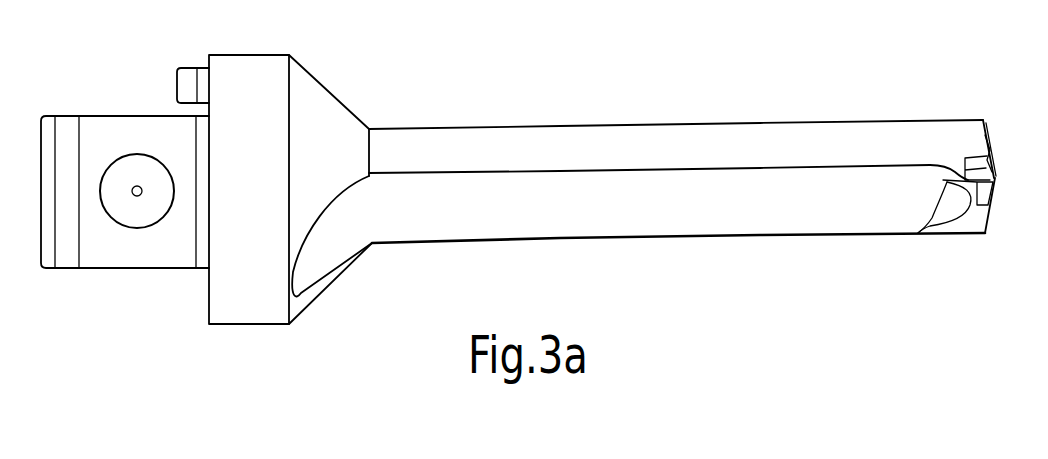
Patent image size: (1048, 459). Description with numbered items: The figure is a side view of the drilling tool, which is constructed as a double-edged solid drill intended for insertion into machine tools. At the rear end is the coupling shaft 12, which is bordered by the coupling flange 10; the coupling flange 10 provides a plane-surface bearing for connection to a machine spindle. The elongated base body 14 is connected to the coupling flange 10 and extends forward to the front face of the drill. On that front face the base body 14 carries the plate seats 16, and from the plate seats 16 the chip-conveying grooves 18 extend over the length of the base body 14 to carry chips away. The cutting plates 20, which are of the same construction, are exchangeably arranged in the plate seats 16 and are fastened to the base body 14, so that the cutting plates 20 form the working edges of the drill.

The coupling flange 10 is at (253, 123).
The coupling shaft 12 is at (155, 247).
The base body 14 is at (577, 155).
The plate seat 16 is at (993, 172).
The chip-conveying groove 18 is at (682, 202).
The cutting plate 20 is at (987, 141).